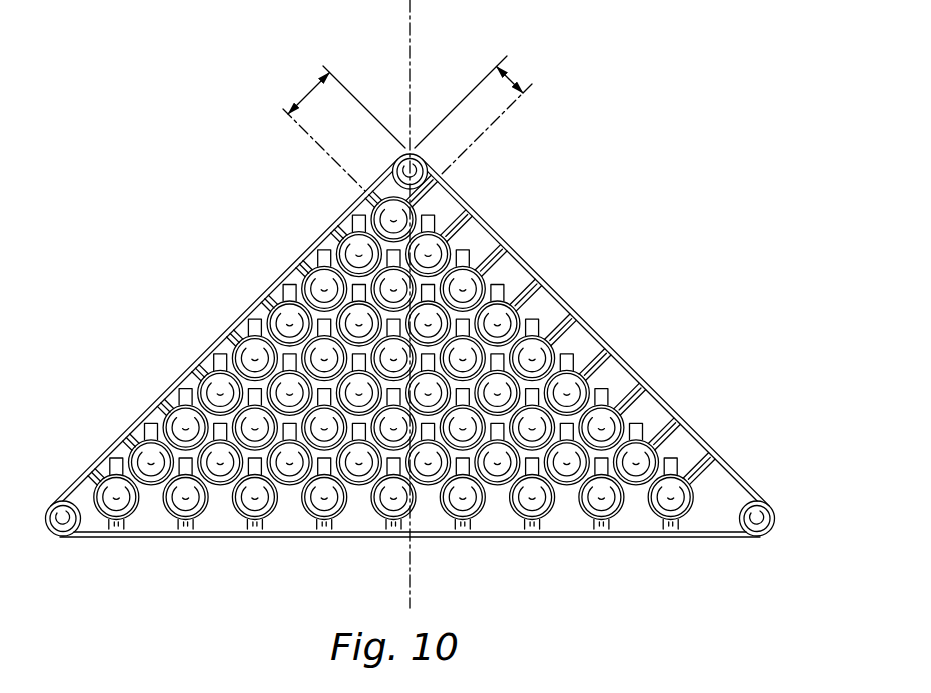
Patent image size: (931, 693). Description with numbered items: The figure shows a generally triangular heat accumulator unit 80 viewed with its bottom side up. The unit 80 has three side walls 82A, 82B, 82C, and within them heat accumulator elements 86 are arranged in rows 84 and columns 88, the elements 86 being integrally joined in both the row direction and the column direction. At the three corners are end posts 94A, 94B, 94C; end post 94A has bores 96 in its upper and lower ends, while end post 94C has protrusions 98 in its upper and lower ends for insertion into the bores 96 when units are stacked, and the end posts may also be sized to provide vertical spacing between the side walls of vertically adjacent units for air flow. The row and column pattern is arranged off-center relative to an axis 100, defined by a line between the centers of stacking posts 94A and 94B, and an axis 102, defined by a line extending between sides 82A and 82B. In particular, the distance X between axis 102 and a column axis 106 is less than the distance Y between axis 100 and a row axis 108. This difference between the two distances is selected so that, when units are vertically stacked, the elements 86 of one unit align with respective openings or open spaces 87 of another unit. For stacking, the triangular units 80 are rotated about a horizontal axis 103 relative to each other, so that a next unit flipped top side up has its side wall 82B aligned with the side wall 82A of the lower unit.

The heat accumulator unit 80 is at (397, 360).
The side wall 82A is at (316, 239).
The side wall 82B is at (527, 261).
The side wall 82C is at (377, 538).
The rows 84 is at (189, 355).
The heat accumulator elements 86 is at (617, 499).
The openings or open spaces 87 is at (325, 464).
The columns 88 is at (584, 306).
The end post 94A is at (770, 535).
The end post 94B is at (423, 160).
The end post 94C is at (54, 533).
The bores 96 is at (742, 518).
The protrusions 98 is at (60, 513).
The axis 100 is at (350, 90).
The axis 102 is at (467, 93).
The horizontal axis 103 is at (412, 12).
The column axis 106 is at (492, 124).
The row axis 108 is at (321, 147).